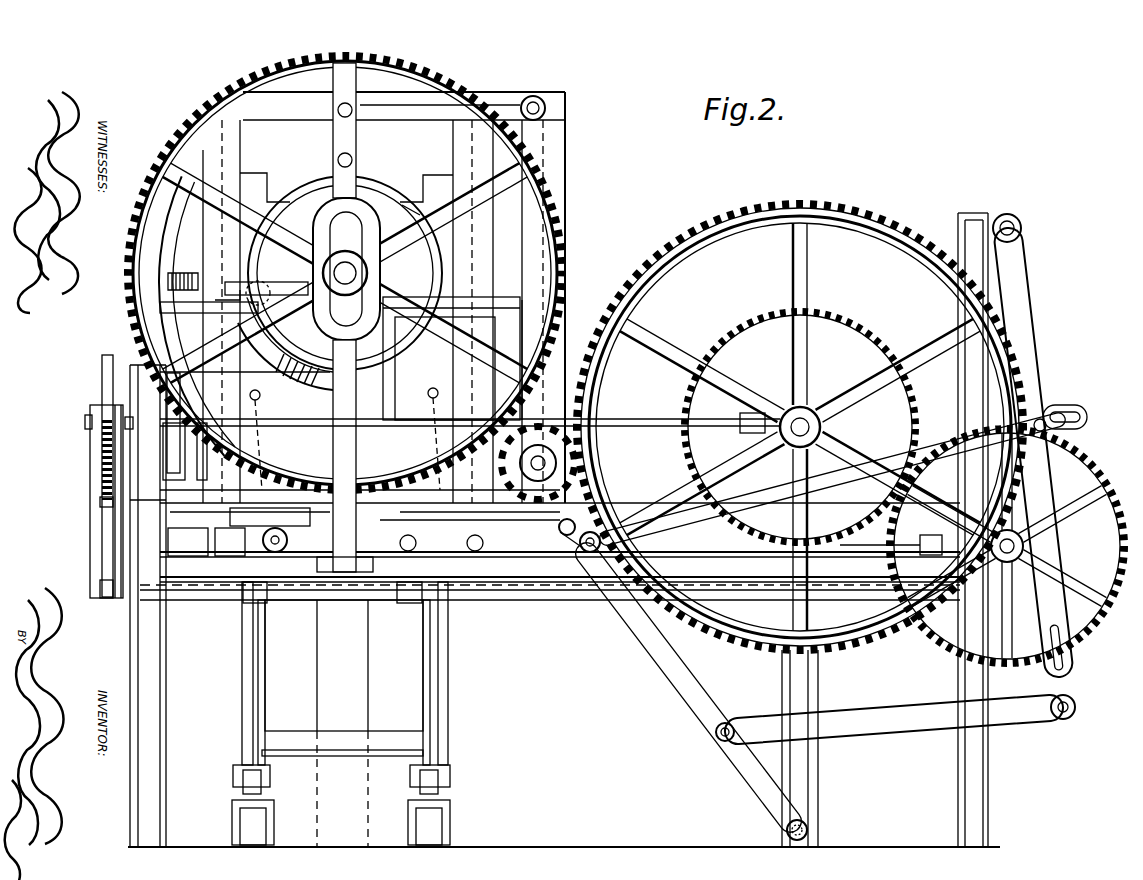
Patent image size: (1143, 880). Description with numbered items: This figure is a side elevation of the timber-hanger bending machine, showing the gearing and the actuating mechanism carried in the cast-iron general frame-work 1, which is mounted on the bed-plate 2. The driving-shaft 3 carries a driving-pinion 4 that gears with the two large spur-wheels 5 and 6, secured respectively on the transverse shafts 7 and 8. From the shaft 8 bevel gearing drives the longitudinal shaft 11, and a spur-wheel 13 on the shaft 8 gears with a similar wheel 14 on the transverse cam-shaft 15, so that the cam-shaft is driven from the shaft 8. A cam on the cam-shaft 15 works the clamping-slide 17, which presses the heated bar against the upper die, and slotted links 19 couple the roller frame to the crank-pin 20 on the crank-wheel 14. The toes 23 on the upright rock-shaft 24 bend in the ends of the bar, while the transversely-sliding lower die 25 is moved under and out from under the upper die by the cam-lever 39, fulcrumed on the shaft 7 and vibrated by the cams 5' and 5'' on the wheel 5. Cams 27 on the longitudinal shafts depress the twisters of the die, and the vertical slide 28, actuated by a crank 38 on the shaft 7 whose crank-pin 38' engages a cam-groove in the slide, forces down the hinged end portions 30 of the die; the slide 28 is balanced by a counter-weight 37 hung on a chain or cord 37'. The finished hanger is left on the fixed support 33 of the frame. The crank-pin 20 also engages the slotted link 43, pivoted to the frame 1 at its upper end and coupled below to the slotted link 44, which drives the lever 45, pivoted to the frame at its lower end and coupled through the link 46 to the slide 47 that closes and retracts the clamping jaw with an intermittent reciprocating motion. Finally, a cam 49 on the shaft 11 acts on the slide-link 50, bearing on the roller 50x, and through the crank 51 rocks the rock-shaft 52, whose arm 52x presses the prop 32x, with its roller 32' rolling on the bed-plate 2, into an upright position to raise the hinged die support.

The general frame-work 1 is at (962, 228).
The bed-plate 2 is at (602, 848).
The driving-shaft 3 is at (565, 462).
The driving-pinion 4 is at (538, 474).
The spur-wheel 5 is at (345, 271).
The cam 5' is at (285, 345).
The cam 5'' is at (197, 316).
The spur-wheel 6 is at (862, 222).
The transverse shaft 7 is at (345, 273).
The transverse shaft 8 is at (822, 428).
The longitudinal shaft 11 is at (612, 419).
The spur-wheel 13 is at (852, 318).
The spur-wheel 14 is at (1112, 512).
The cam-shaft 15 is at (1025, 545).
The clamping-slide 17 is at (891, 545).
The slotted link 19 is at (688, 510).
The crank-pin 20 is at (1055, 418).
The toe 23 is at (239, 532).
The upright rock-shaft 24 is at (145, 268).
The lower die 25 is at (358, 585).
The cam 27 is at (362, 458).
The vertical slide 28 is at (345, 341).
The end portion of die 30 is at (232, 519).
The prop 32x is at (242, 700).
The roller 32' is at (318, 822).
The fixed support 33 is at (342, 723).
The counter-weight 37 is at (536, 360).
The chain or cord 37' is at (440, 111).
The crank 38 is at (266, 292).
The crank-pin 38' is at (226, 279).
The cam-lever 39 is at (346, 201).
The slotted link 43 is at (1025, 278).
The slotted link 44 is at (875, 730).
The lever 45 is at (700, 700).
The link 46 is at (455, 512).
The slide 47 is at (275, 548).
The cam 49 is at (100, 372).
The slide-link 50 is at (90, 548).
The roller 50x is at (100, 505).
The crank 51 is at (106, 600).
The rock-shaft 52 is at (190, 592).
The arm 52x is at (250, 650).